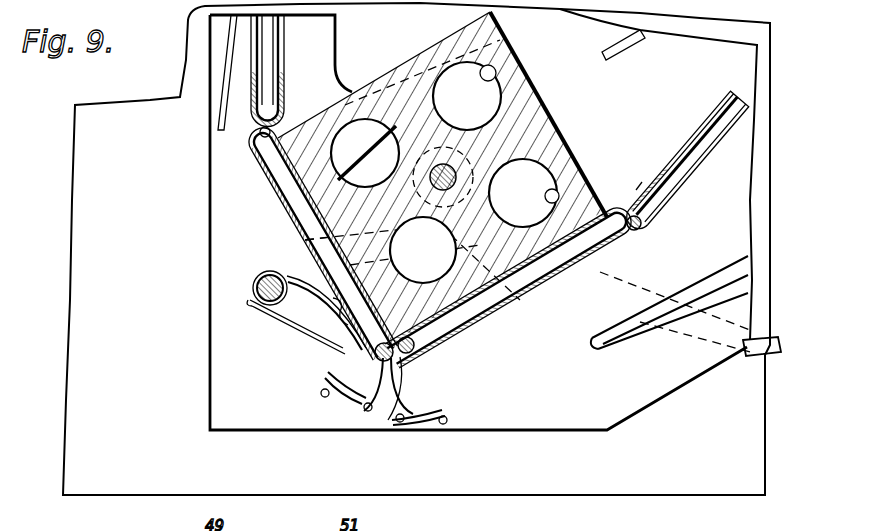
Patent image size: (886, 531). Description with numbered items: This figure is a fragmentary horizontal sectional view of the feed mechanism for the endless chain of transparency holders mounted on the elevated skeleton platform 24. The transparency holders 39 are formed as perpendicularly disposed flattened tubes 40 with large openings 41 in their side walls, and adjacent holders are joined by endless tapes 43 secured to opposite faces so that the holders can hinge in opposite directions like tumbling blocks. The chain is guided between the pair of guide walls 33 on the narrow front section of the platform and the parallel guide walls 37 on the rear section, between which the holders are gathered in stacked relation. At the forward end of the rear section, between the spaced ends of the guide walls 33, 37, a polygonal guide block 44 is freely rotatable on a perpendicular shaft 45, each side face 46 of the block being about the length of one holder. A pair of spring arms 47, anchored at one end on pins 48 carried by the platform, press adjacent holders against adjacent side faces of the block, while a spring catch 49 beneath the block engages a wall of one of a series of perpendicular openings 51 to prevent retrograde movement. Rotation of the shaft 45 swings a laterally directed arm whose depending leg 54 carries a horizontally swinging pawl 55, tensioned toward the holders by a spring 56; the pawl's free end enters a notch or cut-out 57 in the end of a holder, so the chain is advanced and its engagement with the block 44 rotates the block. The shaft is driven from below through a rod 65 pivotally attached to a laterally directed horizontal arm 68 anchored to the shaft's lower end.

The elevated skeleton platform 24 is at (323, 40).
The guide walls 33 is at (226, 106).
The guide walls 37 is at (625, 45).
The transparency holders 39 is at (676, 140).
The flattened tubes 40 is at (640, 182).
The openings 41 is at (702, 120).
The endless tapes 43 is at (283, 108).
The polygonal guide block 44 is at (530, 128).
The perpendicular shaft 45 is at (524, 193).
The side faces 46 is at (532, 96).
The spring arms 47 is at (290, 222).
The pins 48 is at (355, 407).
The spring catch 49 is at (365, 153).
The perpendicular openings 51 is at (512, 60).
The depending leg 54 is at (252, 292).
The pawl 55 is at (300, 340).
The spring 56 is at (280, 318).
The notch or cut-out 57 is at (258, 112).
The rod 65 is at (758, 357).
The laterally directed horizontal arm 68 is at (308, 241).